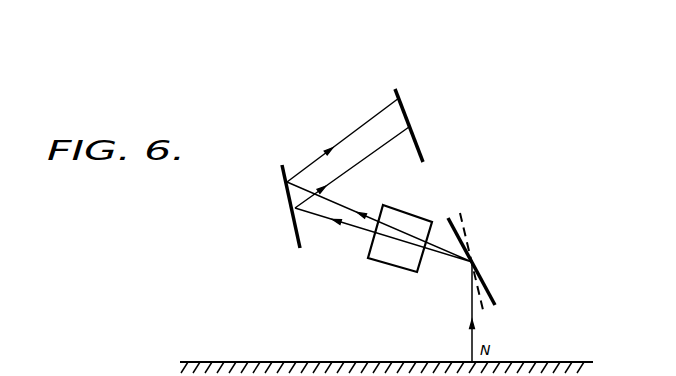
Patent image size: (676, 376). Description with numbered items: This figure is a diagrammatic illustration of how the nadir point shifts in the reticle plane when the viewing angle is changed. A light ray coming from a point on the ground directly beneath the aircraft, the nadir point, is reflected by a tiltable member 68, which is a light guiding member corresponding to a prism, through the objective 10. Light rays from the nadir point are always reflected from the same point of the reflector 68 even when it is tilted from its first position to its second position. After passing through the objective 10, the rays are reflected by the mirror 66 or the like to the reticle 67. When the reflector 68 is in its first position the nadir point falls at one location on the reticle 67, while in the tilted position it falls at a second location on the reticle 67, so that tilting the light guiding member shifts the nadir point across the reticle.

The objective 10 is at (393, 265).
The mirror 66 is at (292, 225).
The reticle 67 is at (395, 90).
The tiltable member 68 is at (488, 290).